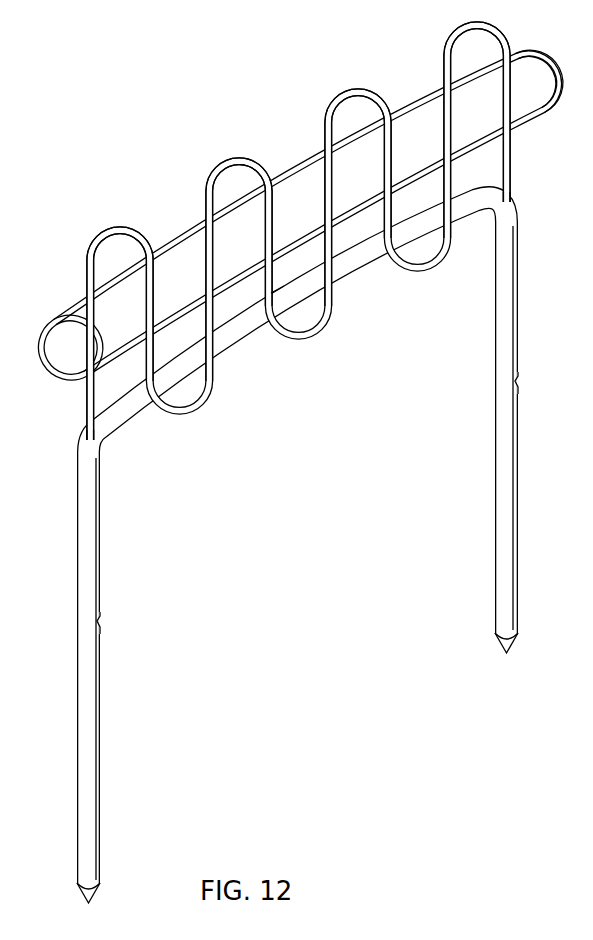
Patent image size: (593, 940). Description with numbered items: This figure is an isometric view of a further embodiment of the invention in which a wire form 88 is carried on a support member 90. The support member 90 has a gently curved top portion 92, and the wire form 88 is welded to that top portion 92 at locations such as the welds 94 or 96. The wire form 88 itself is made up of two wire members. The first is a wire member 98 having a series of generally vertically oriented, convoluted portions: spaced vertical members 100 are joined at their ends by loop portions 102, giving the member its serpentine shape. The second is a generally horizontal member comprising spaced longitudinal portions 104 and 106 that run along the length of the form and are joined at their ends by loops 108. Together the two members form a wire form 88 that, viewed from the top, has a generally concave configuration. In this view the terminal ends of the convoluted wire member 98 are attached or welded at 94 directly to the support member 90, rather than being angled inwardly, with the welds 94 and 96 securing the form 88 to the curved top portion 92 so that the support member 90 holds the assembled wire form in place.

The wire form 88 is at (213, 152).
The support member 90 is at (105, 548).
The top portion 92 is at (247, 340).
The weld 94 is at (84, 432).
The weld 96 is at (277, 287).
The wire member 98 is at (511, 155).
The vertical members 100 is at (153, 313).
The loop portions 102 is at (125, 227).
The longitudinal portion 104 is at (302, 163).
The longitudinal portion 106 is at (410, 173).
The loops 108 is at (48, 337).